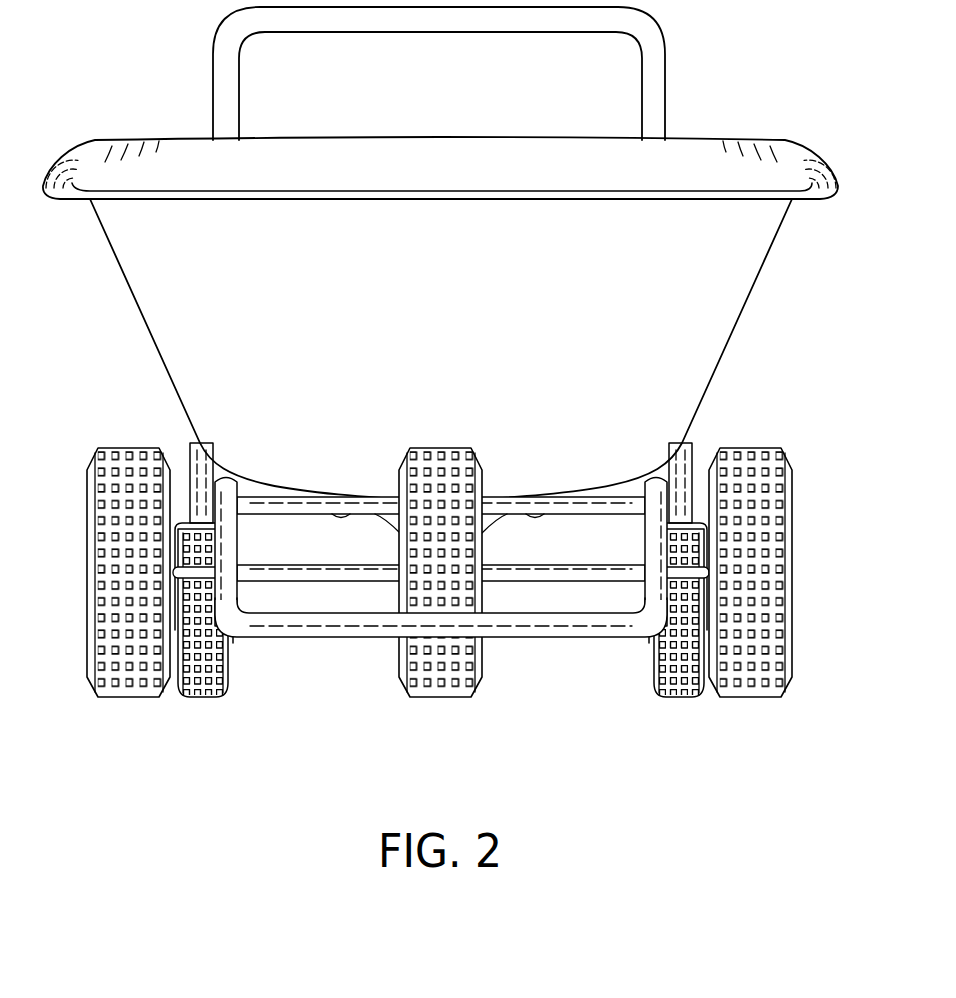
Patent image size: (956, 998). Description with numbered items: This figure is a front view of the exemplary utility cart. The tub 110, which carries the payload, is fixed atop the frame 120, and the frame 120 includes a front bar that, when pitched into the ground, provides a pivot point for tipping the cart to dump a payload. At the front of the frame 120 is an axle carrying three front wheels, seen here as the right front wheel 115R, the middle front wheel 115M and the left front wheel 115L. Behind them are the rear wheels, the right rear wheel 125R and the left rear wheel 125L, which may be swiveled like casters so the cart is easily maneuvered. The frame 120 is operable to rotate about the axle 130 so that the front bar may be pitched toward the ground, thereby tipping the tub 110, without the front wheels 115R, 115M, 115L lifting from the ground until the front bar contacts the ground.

The tub aspect 110 is at (424, 184).
The right front wheel 115R is at (90, 678).
The middle front wheel 115M is at (480, 668).
The left front wheel 115L is at (793, 672).
The frame 120 is at (660, 505).
The right rear wheel 125R is at (232, 678).
The left rear wheel 125L is at (654, 657).
The axle 130 is at (355, 582).